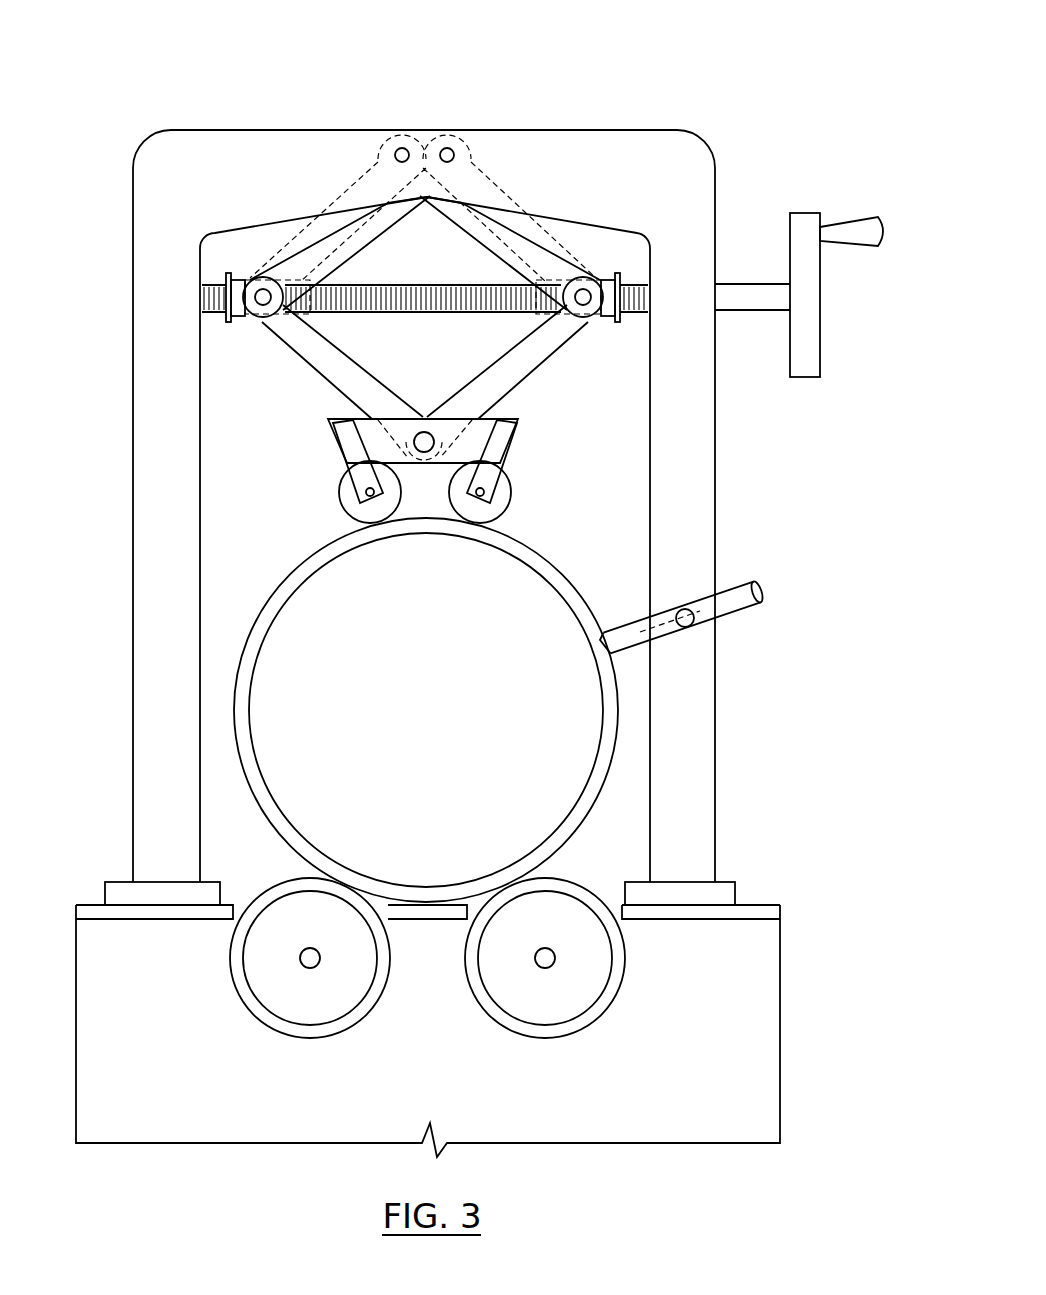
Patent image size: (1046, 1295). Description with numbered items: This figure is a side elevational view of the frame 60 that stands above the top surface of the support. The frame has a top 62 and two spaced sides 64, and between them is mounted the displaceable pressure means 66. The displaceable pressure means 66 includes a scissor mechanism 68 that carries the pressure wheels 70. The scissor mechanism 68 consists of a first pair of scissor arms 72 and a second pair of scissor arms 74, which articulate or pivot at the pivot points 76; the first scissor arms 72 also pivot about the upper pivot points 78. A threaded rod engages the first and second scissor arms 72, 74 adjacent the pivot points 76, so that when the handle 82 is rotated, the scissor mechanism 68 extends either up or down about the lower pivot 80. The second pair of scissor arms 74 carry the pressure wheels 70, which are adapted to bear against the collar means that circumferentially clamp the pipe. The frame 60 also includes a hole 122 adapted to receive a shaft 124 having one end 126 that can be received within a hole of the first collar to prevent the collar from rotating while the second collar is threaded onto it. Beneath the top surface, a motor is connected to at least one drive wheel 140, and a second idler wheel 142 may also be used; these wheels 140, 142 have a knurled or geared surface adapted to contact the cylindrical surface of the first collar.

The frame 60 is at (695, 745).
The top 62 is at (643, 147).
The spaced sides 64 is at (130, 512).
The displaceable pressure means 66 is at (297, 235).
The scissor mechanism 68 is at (570, 240).
The pressure wheels 70 is at (338, 502).
The first pair of scissor arms 72 is at (350, 218).
The second pair of scissor arms 74 is at (330, 365).
The pivot points 76 is at (256, 280).
The pivot points 78 is at (401, 147).
The lower pivot bracket 80 is at (600, 316).
The handle 82 is at (822, 333).
The hole 122 is at (700, 628).
The shaft 124 is at (688, 628).
The end 126 is at (605, 640).
The drive wheel 140 is at (248, 1002).
The second idler wheel 142 is at (608, 1002).